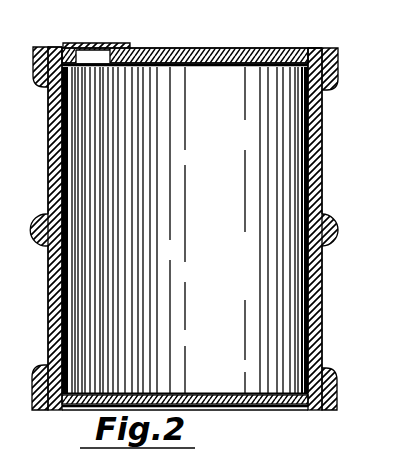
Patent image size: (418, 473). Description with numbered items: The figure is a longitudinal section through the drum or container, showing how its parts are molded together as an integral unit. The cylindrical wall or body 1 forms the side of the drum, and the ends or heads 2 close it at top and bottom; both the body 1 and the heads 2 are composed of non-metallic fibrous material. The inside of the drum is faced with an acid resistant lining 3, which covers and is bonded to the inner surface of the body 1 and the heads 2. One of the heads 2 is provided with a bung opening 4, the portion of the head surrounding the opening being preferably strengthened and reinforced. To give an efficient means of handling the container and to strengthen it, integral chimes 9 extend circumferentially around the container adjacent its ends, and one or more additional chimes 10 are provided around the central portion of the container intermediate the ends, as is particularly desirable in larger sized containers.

The cylindrical wall or body 1 is at (184, 226).
The ends or heads 2 is at (232, 410).
The acid resistant lining 3 is at (306, 310).
The bung opening 4 is at (108, 62).
The integral chimes 9 is at (327, 88).
The additional chimes 10 is at (38, 216).